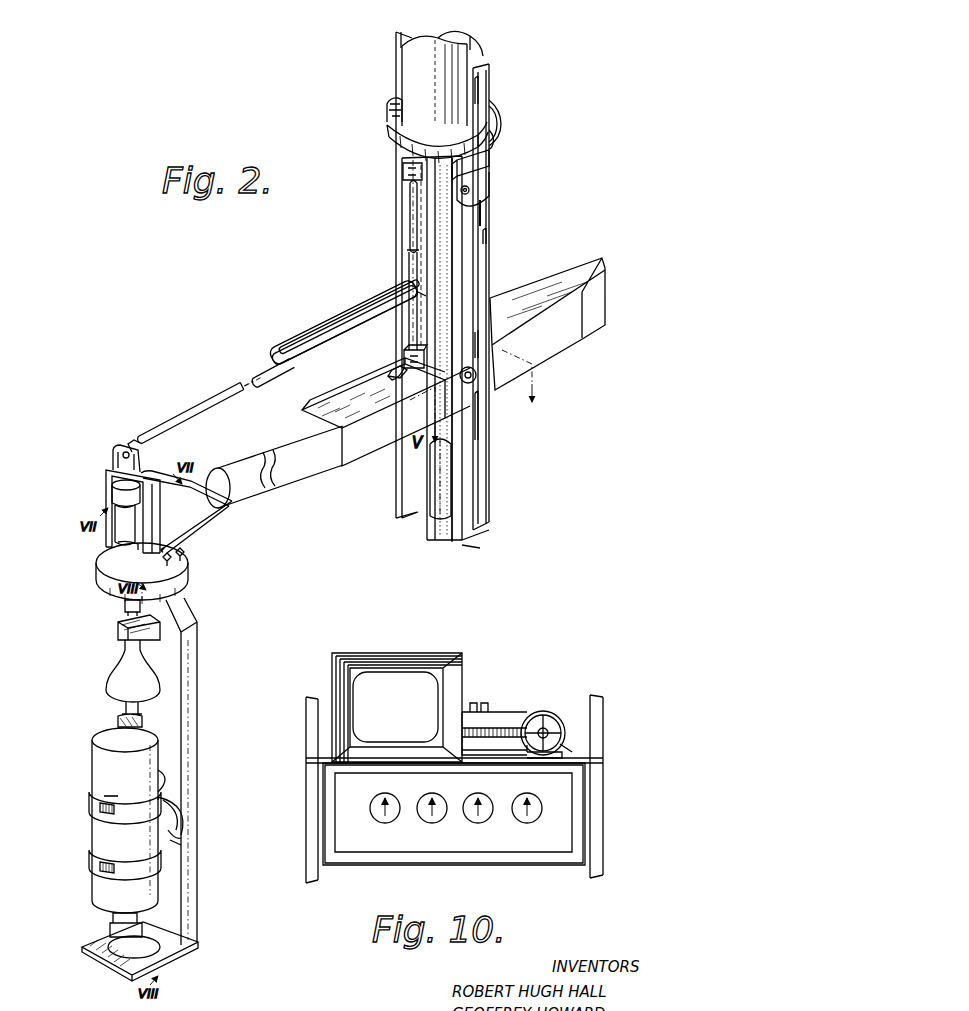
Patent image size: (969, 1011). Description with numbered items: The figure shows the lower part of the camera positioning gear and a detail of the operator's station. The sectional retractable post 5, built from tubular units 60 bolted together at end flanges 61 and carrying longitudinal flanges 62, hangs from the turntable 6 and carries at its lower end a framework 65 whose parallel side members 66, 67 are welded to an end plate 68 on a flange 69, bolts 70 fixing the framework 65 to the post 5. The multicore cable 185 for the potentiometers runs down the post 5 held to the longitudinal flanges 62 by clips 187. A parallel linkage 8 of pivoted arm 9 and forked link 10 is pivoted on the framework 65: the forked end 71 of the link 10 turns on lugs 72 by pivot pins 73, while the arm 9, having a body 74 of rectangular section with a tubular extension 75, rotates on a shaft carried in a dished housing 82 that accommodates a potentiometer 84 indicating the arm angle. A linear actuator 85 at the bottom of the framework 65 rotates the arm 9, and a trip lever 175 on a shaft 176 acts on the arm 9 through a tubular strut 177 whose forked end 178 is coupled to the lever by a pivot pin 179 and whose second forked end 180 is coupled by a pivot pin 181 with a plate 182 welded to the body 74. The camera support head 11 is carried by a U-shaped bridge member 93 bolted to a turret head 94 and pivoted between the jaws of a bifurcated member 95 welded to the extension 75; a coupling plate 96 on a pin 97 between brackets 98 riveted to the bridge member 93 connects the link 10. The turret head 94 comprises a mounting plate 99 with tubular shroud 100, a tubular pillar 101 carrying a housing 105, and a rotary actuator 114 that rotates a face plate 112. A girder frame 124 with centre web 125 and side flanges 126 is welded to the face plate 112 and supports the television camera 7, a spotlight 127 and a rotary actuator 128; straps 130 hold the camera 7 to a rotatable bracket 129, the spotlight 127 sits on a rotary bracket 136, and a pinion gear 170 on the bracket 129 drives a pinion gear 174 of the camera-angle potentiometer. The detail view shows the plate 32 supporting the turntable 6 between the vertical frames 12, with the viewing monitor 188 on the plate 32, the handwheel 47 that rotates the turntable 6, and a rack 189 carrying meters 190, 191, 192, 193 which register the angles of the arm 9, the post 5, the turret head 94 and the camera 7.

In FIG. 2, the post 5 is at (479, 88).
In FIG. 10, the turntable 6 is at (488, 724).
In FIG. 2, the television camera 7 is at (125, 820).
In FIG. 2, the parallel linkage 8 is at (370, 437).
In FIG. 2, the arm 9 is at (330, 395).
In FIG. 2, the forked link 10 is at (303, 340).
In FIG. 2, the camera support head 11 is at (238, 810).
In FIG. 10, the vertical frames 12 is at (593, 771).
In FIG. 10, the plate 32 is at (577, 755).
In FIG. 10, the handwheel 47 is at (553, 713).
In FIG. 2, the tubular units 60 is at (417, 70).
In FIG. 2, the end flanges 61 is at (412, 130).
In FIG. 2, the longitudinal flanges 62 is at (398, 44).
In FIG. 2, the framework 65 is at (470, 240).
In FIG. 2, the side member 66 is at (402, 163).
In FIG. 2, the side member 67 is at (490, 157).
In FIG. 2, the end plate 68 is at (470, 191).
In FIG. 2, the flange 69 is at (492, 140).
In FIG. 2, the bolts 70 is at (388, 114).
In FIG. 2, the forked end 71 is at (348, 313).
In FIG. 2, the lugs 72 is at (424, 294).
In FIG. 2, the pivot pins 73 is at (392, 325).
In FIG. 2, the body 74 is at (582, 341).
In FIG. 2, the tubular extension 75 is at (270, 447).
In FIG. 2, the housing 82 is at (470, 393).
In FIG. 2, the potentiometer 84 is at (476, 383).
In FIG. 2, the linear actuator 85 is at (443, 497).
In FIG. 2, the U-shaped bridge member 93 is at (107, 485).
In FIG. 2, the turret head 94 is at (103, 575).
In FIG. 2, the bifurcated member 95 is at (220, 522).
In FIG. 2, the coupling plate 96 is at (131, 443).
In FIG. 2, the pin 97 is at (158, 434).
In FIG. 2, the brackets 98 is at (113, 458).
In FIG. 2, the mounting plate 99 is at (186, 553).
In FIG. 2, the tubular shroud 100 is at (180, 578).
In FIG. 2, the tubular pillar 101 is at (140, 548).
In FIG. 2, the housing 105 is at (113, 489).
In FIG. 2, the face plate 112 is at (175, 610).
In FIG. 2, the rotary actuator 114 is at (120, 528).
In FIG. 2, the girder frame 124 is at (256, 732).
In FIG. 2, the centre web 125 is at (175, 653).
In FIG. 2, the side flanges 126 is at (192, 691).
In FIG. 2, the spotlight 127 is at (130, 683).
In FIG. 2, the rotary actuator 128 is at (126, 606).
In FIG. 2, the rotatable bracket 129 is at (167, 822).
In FIG. 2, the straps 130 is at (103, 812).
In FIG. 2, the rotary bracket 136 is at (125, 634).
In FIG. 2, the pinion gear 170 is at (174, 840).
In FIG. 2, the pinion gear 174 is at (170, 785).
In FIG. 2, the trip lever 175 is at (404, 174).
In FIG. 2, the shaft 176 is at (470, 192).
In FIG. 2, the tubular strut 177 is at (410, 238).
In FIG. 2, the forked end 178 is at (418, 193).
In FIG. 2, the pivot pin 179 is at (414, 218).
In FIG. 2, the second forked end 180 is at (406, 358).
In FIG. 2, the pivot pin 181 is at (398, 376).
In FIG. 2, the plate 182 is at (398, 376).
In FIG. 2, the multicore cable 185 is at (482, 211).
In FIG. 2, the clips 187 is at (491, 110).
In FIG. 10, the viewing monitor 188 is at (383, 682).
In FIG. 10, the rack 189 is at (347, 800).
In FIG. 10, the meter 190 is at (378, 830).
In FIG. 10, the meter 191 is at (425, 830).
In FIG. 10, the meter 192 is at (471, 830).
In FIG. 10, the meter 193 is at (545, 832).